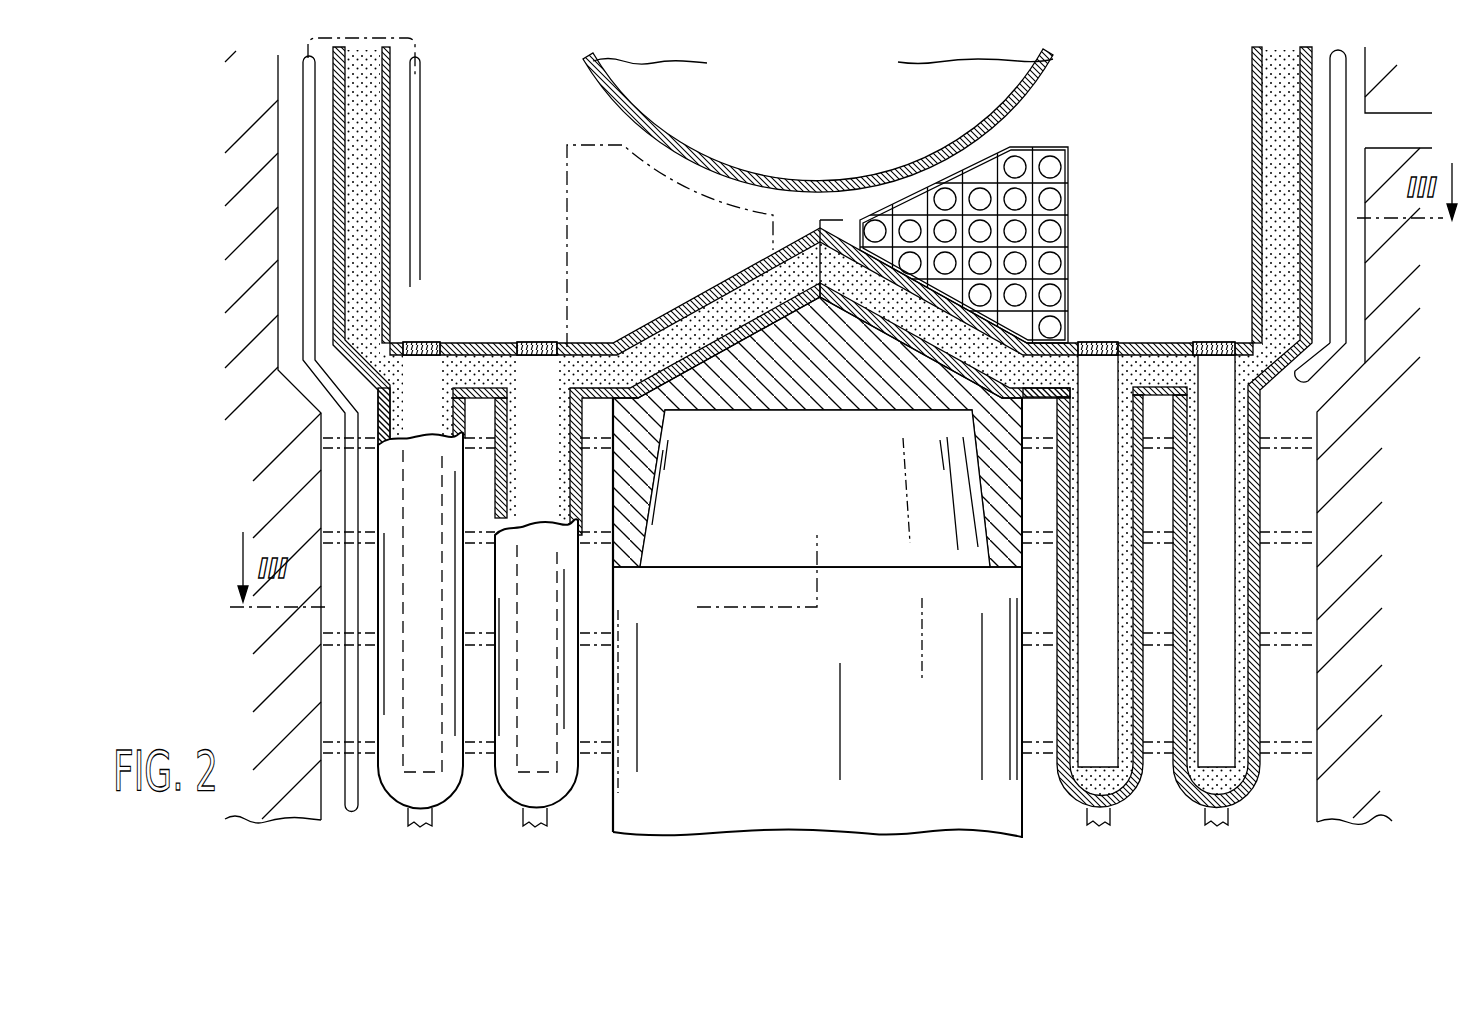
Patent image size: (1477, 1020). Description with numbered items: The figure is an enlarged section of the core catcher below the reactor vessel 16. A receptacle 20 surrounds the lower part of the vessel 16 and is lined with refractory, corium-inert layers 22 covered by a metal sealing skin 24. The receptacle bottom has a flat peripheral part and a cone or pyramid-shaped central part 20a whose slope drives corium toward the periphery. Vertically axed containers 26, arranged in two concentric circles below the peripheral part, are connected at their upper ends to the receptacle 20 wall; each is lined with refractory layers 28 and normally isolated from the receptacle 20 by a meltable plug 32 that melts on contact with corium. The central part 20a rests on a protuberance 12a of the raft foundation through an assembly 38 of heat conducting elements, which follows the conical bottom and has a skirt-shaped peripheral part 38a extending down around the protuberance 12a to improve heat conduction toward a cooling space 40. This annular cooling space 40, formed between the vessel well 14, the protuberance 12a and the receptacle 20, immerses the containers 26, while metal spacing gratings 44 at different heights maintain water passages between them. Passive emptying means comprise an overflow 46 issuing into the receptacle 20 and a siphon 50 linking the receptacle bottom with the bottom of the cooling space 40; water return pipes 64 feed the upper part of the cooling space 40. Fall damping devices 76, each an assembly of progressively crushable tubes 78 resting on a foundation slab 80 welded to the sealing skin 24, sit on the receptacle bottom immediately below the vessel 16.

The protuberance 12a is at (743, 751).
The vessel well 14 is at (204, 234).
The reactor vessel 16 is at (1052, 74).
The receptacle 20 is at (325, 128).
The central part 20a is at (733, 278).
The layers 22 is at (365, 80).
The metal sealing skin 24 is at (390, 173).
The containers 26 is at (592, 693).
The layers 28 is at (385, 408).
The meltable plug 32 is at (527, 343).
The assembly of heat conducting elements 38 is at (830, 370).
The opening 38a is at (632, 488).
The cooling space 40 is at (1288, 673).
The metal spacing gratings 44 is at (1280, 528).
The overflow 46 is at (1337, 262).
The siphon 50 is at (414, 253).
The water return pipes 64 is at (1413, 128).
The fall damping devices 76 is at (1080, 255).
The tubes 78 is at (1045, 205).
The foundation slab 80 is at (1070, 292).